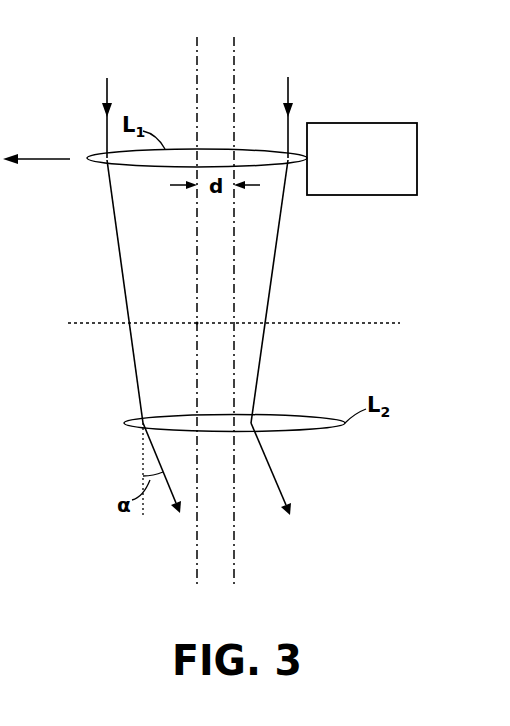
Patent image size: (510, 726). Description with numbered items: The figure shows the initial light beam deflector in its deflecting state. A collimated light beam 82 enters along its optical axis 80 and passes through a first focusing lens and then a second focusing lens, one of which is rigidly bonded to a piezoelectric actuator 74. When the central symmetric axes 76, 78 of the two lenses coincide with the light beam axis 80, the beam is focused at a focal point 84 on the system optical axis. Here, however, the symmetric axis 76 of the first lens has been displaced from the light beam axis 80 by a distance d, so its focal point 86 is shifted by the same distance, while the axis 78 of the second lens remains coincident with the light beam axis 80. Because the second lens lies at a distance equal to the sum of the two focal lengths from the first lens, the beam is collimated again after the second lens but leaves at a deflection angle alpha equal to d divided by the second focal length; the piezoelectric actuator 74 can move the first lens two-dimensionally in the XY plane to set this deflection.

The piezoelectric actuator 74 is at (417, 160).
The central symmetric axis of lens L1 76 is at (197, 57).
The central symmetric axis of lens L2 78 is at (235, 125).
The optical axis of the collimated light beam 80 is at (235, 57).
The collimated light beam 82 is at (289, 97).
The focal point on the optical axis 84 is at (235, 323).
The shifted focal point 86 is at (196, 323).